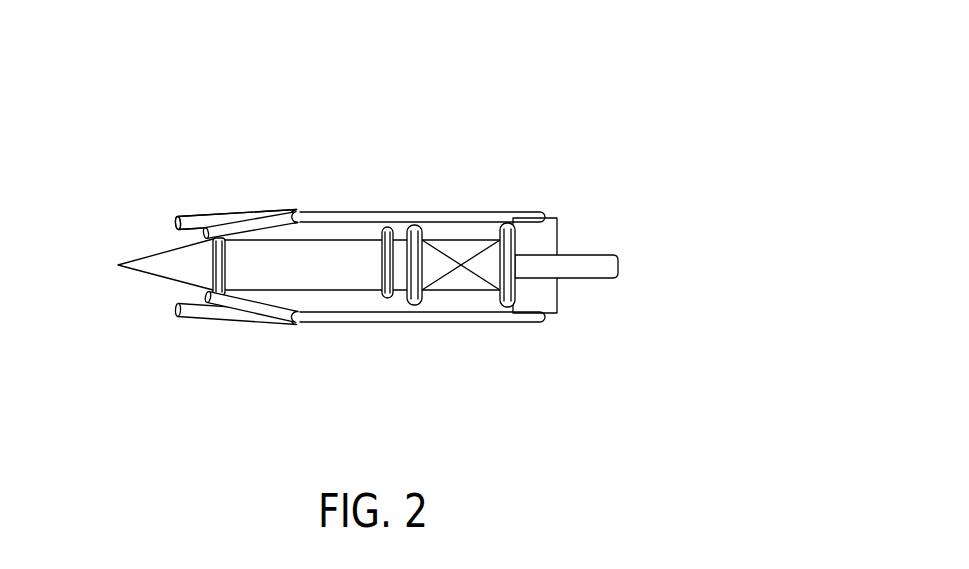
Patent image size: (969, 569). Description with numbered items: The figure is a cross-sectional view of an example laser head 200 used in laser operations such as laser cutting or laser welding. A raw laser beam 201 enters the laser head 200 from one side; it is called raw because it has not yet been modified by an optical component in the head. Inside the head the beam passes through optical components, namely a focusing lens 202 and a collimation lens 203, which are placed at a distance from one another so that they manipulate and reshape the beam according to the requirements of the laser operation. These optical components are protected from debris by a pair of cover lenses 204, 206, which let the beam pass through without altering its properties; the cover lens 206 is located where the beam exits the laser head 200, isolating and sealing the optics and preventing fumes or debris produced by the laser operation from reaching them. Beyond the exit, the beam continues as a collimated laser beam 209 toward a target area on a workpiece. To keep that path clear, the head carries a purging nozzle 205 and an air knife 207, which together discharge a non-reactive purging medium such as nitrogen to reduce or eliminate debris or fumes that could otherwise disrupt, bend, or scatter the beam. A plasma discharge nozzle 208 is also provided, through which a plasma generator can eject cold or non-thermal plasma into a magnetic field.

The laser head 200 is at (632, 125).
The laser beam 201 is at (622, 238).
The focusing lens 202 is at (506, 308).
The collimation lens 203 is at (415, 310).
The cover lens 204 is at (387, 305).
The purging nozzle 205 is at (251, 316).
The cover lens 206 is at (223, 226).
The air knife 207 is at (200, 218).
The plasma discharge nozzle 208 is at (158, 224).
The collimated laser beam 209 is at (126, 278).